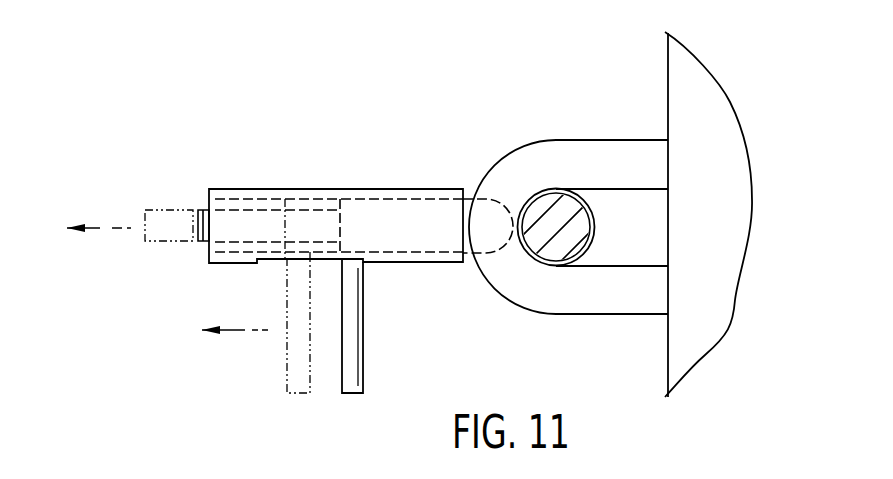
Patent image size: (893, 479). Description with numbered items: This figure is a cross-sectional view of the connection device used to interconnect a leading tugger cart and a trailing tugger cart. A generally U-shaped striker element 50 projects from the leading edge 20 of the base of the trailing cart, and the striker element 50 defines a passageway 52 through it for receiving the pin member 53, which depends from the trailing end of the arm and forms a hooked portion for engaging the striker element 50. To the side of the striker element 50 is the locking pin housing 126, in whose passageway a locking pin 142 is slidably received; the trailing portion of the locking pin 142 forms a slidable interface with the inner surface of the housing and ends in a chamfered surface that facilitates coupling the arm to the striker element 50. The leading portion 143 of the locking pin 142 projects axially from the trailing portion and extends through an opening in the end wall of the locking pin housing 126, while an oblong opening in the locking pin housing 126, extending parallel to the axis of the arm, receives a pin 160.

The leading edge 20 is at (668, 100).
The striker element 50 is at (530, 142).
The passageway 52 is at (642, 242).
The pin member 53 is at (556, 266).
The locking pin housing 126 is at (223, 187).
The locking pin 142 is at (405, 258).
The leading portion 143 is at (198, 243).
The pin 160 is at (360, 393).